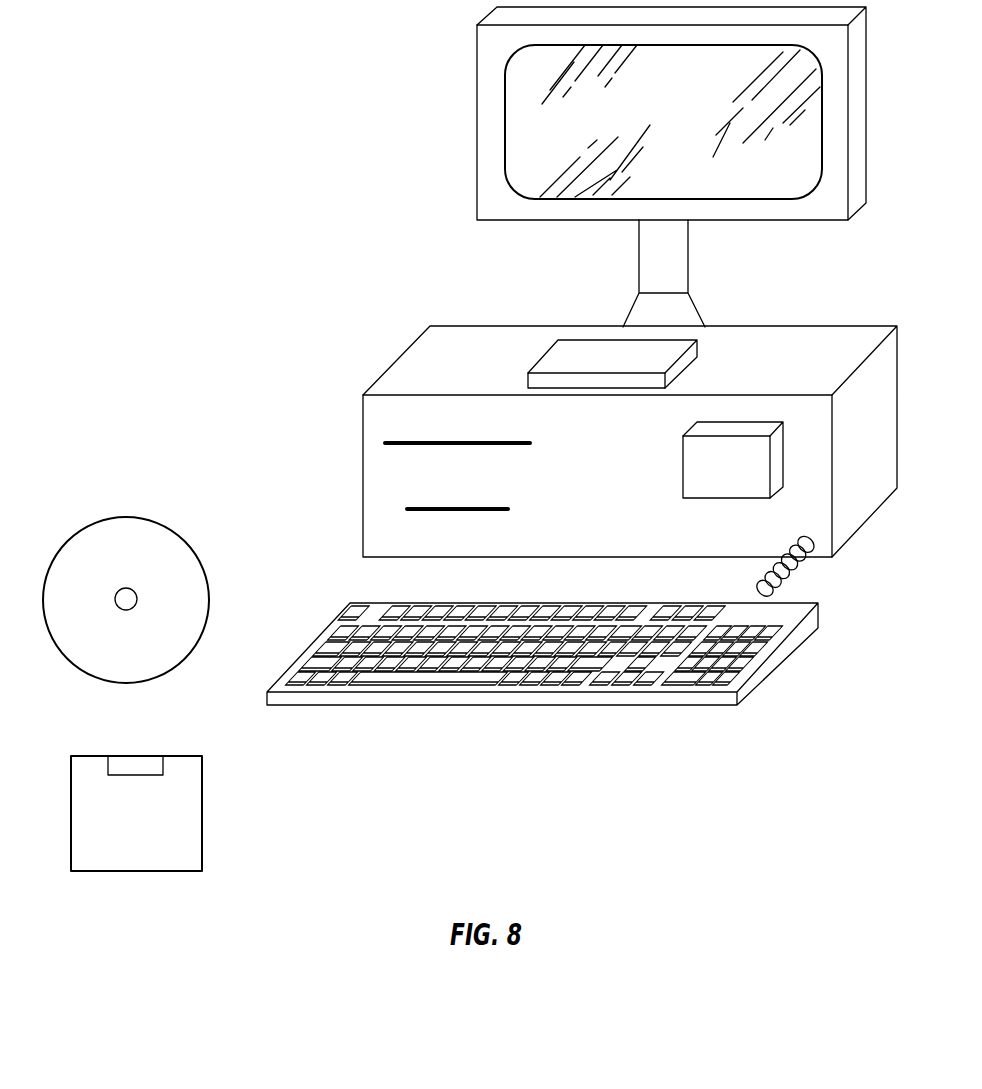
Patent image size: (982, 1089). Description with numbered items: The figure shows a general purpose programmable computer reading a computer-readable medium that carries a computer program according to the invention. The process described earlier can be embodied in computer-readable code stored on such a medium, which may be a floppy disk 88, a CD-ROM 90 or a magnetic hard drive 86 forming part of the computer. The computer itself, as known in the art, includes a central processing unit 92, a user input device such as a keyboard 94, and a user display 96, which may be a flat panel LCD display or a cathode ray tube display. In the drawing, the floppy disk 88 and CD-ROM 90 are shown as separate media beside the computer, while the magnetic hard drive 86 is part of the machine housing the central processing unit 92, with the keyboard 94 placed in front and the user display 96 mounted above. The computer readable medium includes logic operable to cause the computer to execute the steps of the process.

The magnetic hard drive 86 is at (702, 498).
The floppy disk 88 is at (190, 756).
The CD-ROM 90 is at (125, 517).
The central processing unit 92 is at (578, 338).
The keyboard 94 is at (349, 603).
The user display 96 is at (512, 103).